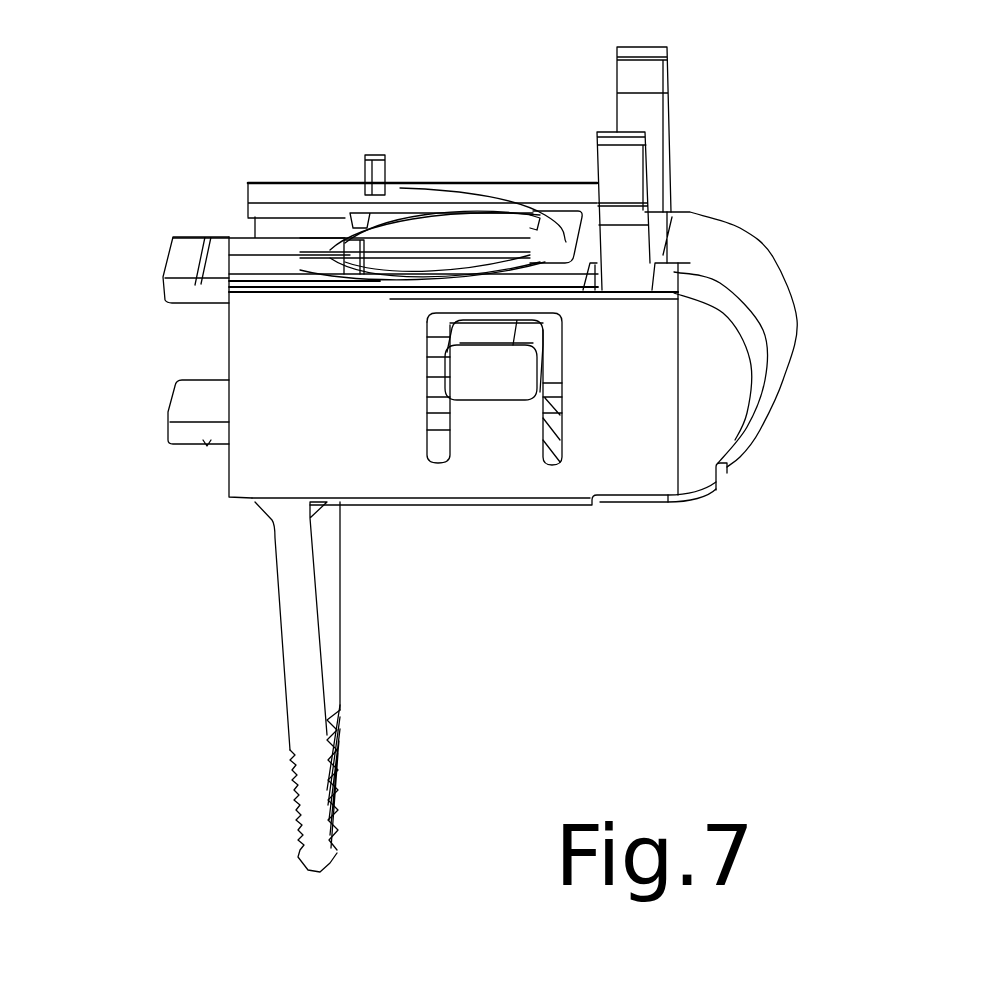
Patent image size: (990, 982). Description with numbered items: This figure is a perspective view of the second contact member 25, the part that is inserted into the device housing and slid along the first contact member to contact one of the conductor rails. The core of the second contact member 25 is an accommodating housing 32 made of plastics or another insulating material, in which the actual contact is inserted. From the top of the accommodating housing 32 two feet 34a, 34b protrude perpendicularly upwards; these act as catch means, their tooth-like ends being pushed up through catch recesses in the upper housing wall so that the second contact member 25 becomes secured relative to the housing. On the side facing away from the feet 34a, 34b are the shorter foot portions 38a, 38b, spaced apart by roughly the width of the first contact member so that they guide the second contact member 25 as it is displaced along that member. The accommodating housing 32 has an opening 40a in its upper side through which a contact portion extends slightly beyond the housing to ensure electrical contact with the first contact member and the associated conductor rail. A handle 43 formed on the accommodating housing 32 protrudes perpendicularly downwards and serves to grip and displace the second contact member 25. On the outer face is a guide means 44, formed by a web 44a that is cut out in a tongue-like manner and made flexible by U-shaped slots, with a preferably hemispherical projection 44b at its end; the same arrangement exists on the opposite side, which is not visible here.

The second contact member 25 is at (821, 322).
The accommodating housing 32 is at (637, 453).
The foot 34a is at (650, 75).
The foot 34b is at (630, 167).
The foot portion 38a is at (368, 155).
The foot portion 38b is at (323, 253).
The opening 40a is at (563, 223).
The handle 43 is at (312, 737).
The guide means 44 is at (418, 378).
The web 44a is at (505, 432).
The projection 44b is at (483, 377).